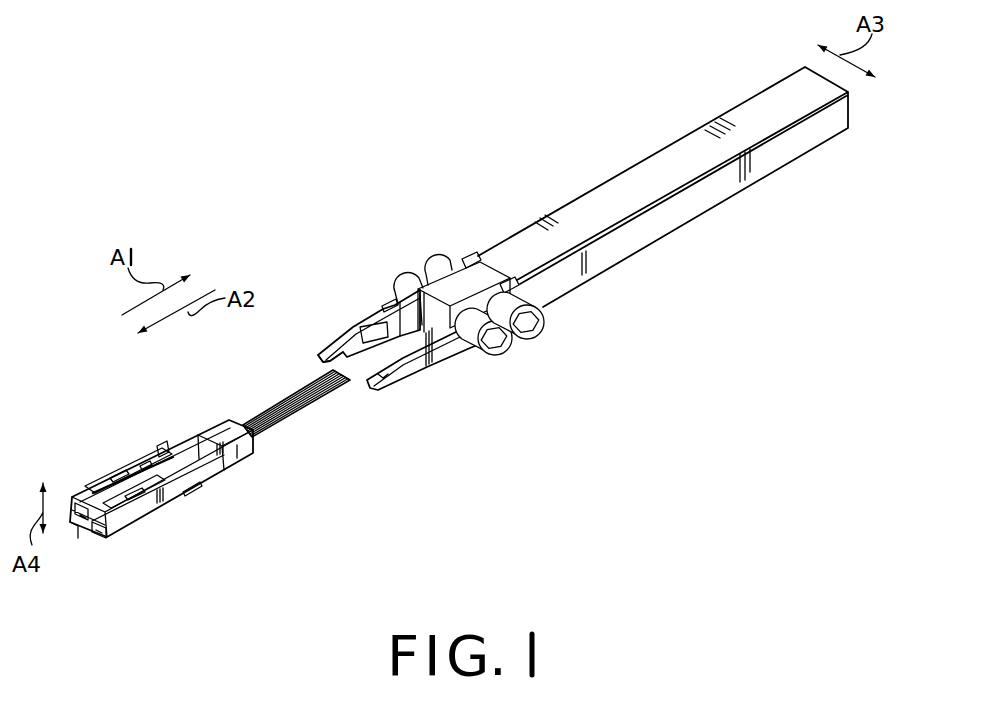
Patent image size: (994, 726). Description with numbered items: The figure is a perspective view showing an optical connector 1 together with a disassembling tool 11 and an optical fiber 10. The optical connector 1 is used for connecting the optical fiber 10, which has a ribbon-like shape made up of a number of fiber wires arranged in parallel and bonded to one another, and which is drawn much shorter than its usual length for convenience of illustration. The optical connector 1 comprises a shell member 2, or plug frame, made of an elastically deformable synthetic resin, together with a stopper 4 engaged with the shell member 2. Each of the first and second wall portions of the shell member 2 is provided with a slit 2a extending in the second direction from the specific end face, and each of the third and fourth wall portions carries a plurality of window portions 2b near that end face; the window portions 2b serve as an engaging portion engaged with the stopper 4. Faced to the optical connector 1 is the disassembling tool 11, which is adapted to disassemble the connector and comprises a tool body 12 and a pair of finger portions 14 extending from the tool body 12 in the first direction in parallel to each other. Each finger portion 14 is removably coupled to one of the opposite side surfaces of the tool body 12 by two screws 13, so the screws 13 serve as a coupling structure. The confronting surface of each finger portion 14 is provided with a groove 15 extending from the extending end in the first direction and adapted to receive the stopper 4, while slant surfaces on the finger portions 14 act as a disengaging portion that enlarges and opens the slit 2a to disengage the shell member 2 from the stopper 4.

The optical connector 1 is at (108, 475).
The shell member 2 is at (140, 472).
The slit 2a is at (192, 488).
The window portions 2b is at (163, 452).
The stopper 4 is at (197, 437).
The optical fiber 10 is at (285, 398).
The disassembling tool 11 is at (607, 178).
The tool body 12 is at (680, 213).
The screws 13 is at (410, 278).
The finger portions 14 is at (382, 303).
The groove 15 is at (343, 358).